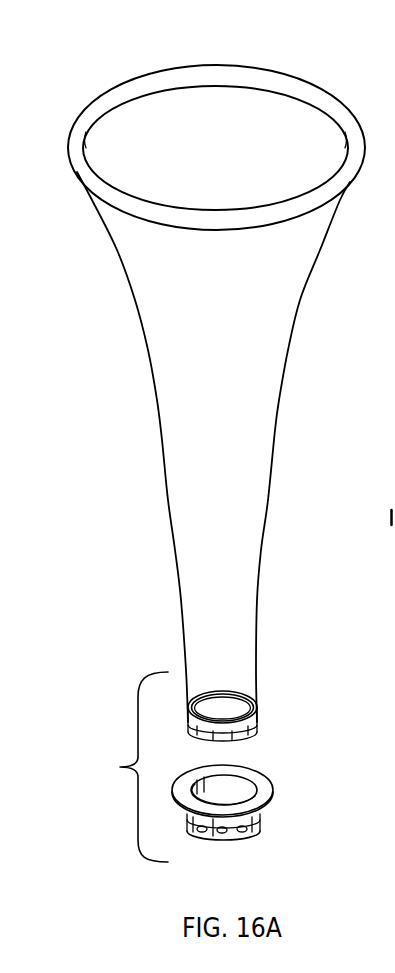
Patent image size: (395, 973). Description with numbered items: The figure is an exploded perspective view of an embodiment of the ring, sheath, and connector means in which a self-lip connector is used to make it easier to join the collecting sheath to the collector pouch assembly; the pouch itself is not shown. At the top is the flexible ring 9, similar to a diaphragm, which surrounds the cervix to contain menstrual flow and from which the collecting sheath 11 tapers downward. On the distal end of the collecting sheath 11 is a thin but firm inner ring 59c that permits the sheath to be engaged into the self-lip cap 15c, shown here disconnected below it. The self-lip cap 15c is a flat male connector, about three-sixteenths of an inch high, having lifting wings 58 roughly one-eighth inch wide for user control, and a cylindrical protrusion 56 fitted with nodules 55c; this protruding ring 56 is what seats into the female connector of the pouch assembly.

The flexible ring 9 is at (295, 78).
The collecting sheath 11 is at (280, 412).
The self-lip cap 15c is at (120, 767).
The inner ring 59c is at (240, 695).
The lifting wings 58 is at (273, 790).
The cylindrical protrusion 56 is at (215, 836).
The nodules 55c is at (250, 833).